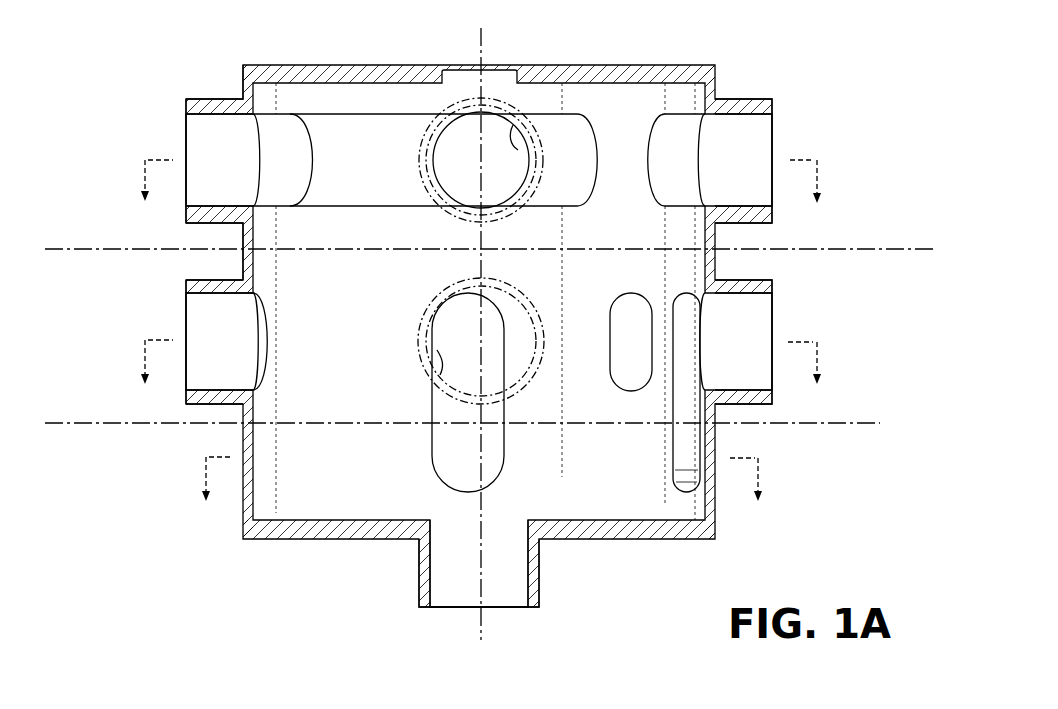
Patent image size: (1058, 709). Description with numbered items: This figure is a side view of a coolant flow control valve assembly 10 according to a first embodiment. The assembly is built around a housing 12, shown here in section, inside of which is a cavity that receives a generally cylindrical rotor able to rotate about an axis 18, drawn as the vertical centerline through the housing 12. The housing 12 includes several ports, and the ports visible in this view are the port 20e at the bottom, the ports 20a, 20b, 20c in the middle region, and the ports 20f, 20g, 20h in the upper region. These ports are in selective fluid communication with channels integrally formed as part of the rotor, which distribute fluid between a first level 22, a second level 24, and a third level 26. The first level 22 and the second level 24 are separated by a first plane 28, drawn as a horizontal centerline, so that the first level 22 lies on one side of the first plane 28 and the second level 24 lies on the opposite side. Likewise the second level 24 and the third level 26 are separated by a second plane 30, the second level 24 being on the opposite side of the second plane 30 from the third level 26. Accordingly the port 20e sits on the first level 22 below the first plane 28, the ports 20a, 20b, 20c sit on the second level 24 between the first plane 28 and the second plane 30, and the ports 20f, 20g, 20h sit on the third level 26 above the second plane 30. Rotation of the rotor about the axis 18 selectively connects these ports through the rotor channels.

The coolant flow control valve assembly 10 is at (904, 116).
The housing 12 is at (715, 258).
The axis 18 is at (482, 48).
The port 20a is at (198, 380).
The port 20b is at (445, 358).
The port 20c is at (753, 308).
The port 20e is at (518, 565).
The port 20f is at (197, 149).
The port 20g is at (537, 148).
The port 20h is at (755, 142).
The first level 22 is at (162, 504).
The second level 24 is at (143, 325).
The third level 26 is at (128, 93).
The first plane 28 is at (805, 425).
The second plane 30 is at (882, 250).